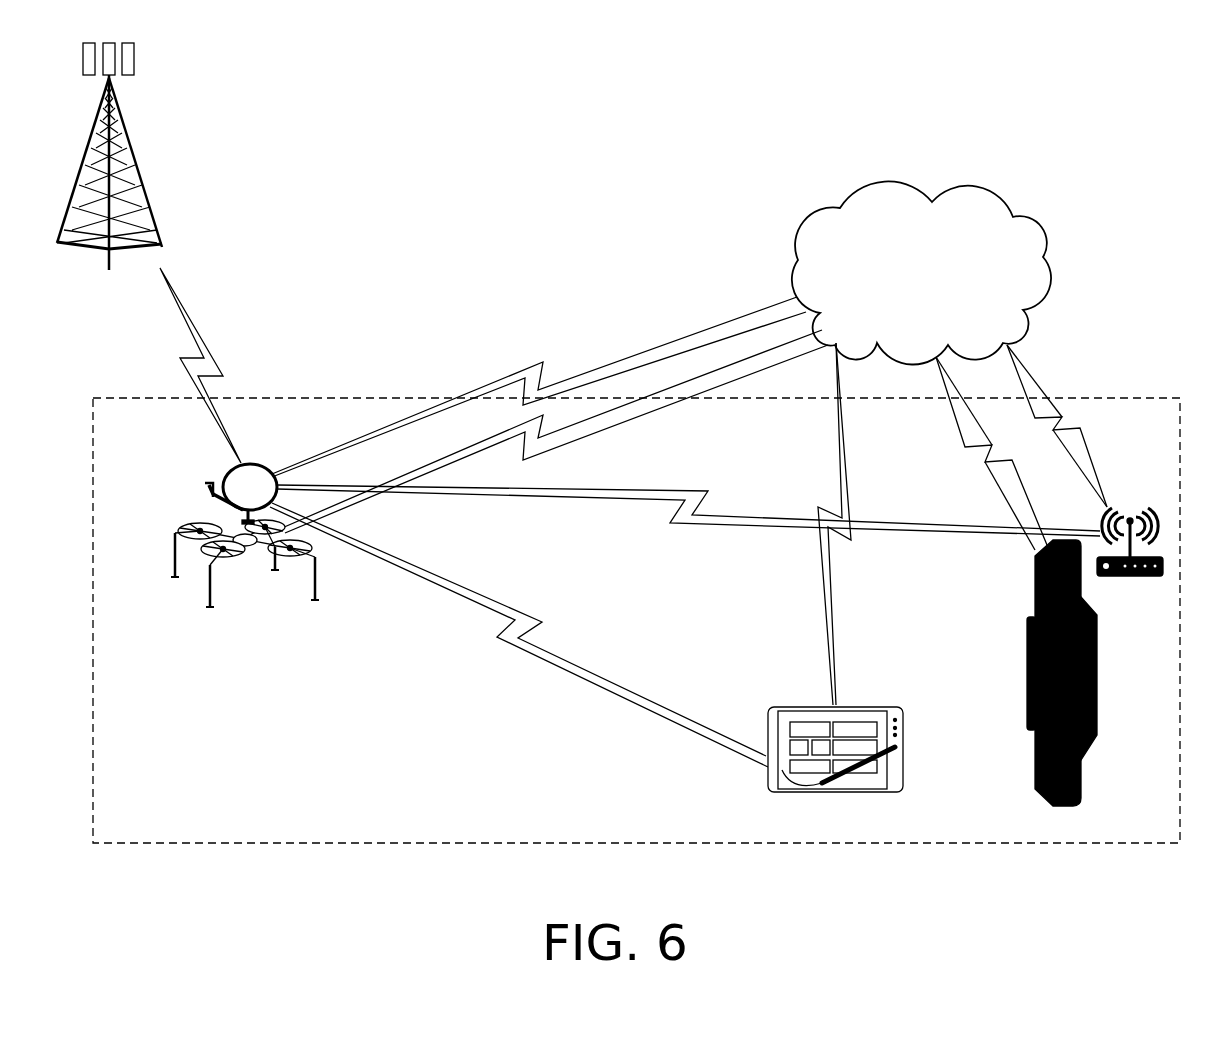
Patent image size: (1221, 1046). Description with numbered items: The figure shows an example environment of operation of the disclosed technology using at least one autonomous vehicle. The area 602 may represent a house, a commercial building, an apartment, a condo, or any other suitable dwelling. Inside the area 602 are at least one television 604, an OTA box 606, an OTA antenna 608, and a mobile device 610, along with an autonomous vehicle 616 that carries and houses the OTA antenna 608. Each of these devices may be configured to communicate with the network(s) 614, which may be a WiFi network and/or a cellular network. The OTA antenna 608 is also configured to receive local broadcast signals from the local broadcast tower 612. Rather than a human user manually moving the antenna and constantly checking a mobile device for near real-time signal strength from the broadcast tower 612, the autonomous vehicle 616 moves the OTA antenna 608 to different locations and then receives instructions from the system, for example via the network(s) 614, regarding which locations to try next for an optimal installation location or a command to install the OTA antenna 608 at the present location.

The area 602 is at (1128, 436).
The television 604 is at (1010, 832).
The OTA box 606 is at (1111, 612).
The OTA antenna 608 is at (171, 503).
The mobile device 610 is at (823, 832).
The local broadcast tower 612 is at (93, 333).
The network(s) 614 is at (921, 272).
The autonomous vehicle 616 is at (228, 649).